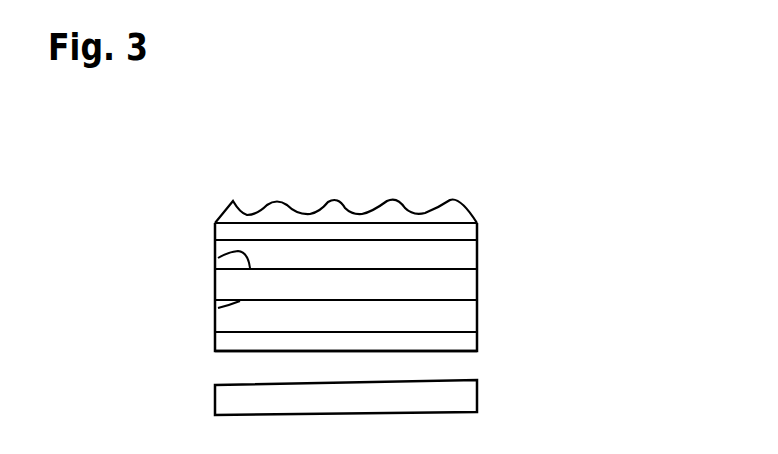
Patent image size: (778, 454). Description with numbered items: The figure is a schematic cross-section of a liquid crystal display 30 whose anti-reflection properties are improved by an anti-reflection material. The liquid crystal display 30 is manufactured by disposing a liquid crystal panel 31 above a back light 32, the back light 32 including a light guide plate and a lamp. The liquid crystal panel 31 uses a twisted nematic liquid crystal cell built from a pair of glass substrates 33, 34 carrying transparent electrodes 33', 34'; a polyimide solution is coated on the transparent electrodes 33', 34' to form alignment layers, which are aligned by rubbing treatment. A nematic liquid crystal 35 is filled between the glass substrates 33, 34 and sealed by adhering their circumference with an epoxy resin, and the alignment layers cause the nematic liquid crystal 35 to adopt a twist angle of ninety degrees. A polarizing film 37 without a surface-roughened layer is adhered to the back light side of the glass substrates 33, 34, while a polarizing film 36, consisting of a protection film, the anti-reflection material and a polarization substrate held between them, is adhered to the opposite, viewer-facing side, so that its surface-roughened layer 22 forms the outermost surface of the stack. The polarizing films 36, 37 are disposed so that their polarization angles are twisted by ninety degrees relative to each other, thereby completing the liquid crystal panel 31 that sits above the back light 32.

The liquid crystal display 30 is at (638, 183).
The liquid crystal panel 31 is at (593, 178).
The back light 32 is at (470, 408).
The surface-roughened layer 22 is at (457, 208).
The polarizing film 36 is at (470, 231).
The glass substrate 33 is at (388, 261).
The transparent electrode 33' is at (203, 277).
The nematic liquid crystal 35 is at (470, 285).
The glass substrate 34 is at (388, 334).
The transparent electrode 34' is at (198, 333).
The polarizing film 37 is at (468, 347).